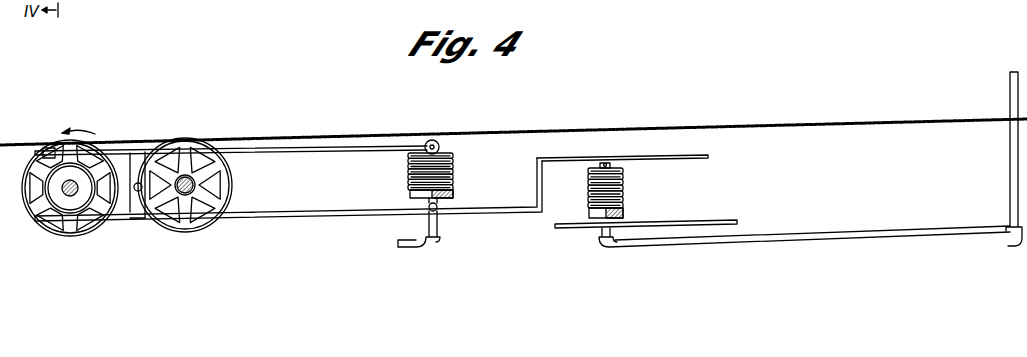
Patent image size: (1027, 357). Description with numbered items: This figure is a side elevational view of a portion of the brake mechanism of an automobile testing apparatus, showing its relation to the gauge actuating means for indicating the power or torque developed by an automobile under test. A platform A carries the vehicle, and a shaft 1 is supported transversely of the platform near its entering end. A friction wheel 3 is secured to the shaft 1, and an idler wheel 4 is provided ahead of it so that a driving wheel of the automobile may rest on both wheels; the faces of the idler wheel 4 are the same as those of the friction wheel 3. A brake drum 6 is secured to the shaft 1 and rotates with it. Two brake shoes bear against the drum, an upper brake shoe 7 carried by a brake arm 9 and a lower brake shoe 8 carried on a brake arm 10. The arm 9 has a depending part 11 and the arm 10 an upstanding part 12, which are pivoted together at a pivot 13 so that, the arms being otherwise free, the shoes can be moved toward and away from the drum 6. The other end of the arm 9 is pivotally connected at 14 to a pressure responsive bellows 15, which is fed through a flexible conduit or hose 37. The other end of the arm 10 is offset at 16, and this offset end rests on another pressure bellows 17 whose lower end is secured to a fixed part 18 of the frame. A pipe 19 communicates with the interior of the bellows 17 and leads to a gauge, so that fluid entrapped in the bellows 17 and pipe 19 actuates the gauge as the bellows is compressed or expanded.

The platform A is at (642, 131).
The shaft 1 is at (73, 197).
The friction wheel 3 is at (33, 211).
The idler wheel 4 is at (190, 228).
The brake drum 6 is at (60, 201).
The upper brake shoe 7 is at (42, 148).
The lower brake shoe 8 is at (55, 218).
The brake arm 9 is at (247, 148).
The brake arm 10 is at (283, 219).
The depending part 11 is at (135, 162).
The upstanding part 12 is at (138, 211).
The pivot 13 is at (132, 191).
The pivotal connection 14 is at (437, 140).
The bellows 15 is at (455, 171).
The offset end 16 is at (552, 158).
The pressure bellows 17 is at (623, 198).
The frame part 18 is at (719, 213).
The pipe 19 is at (877, 226).
The flexible conduit 37 is at (407, 248).